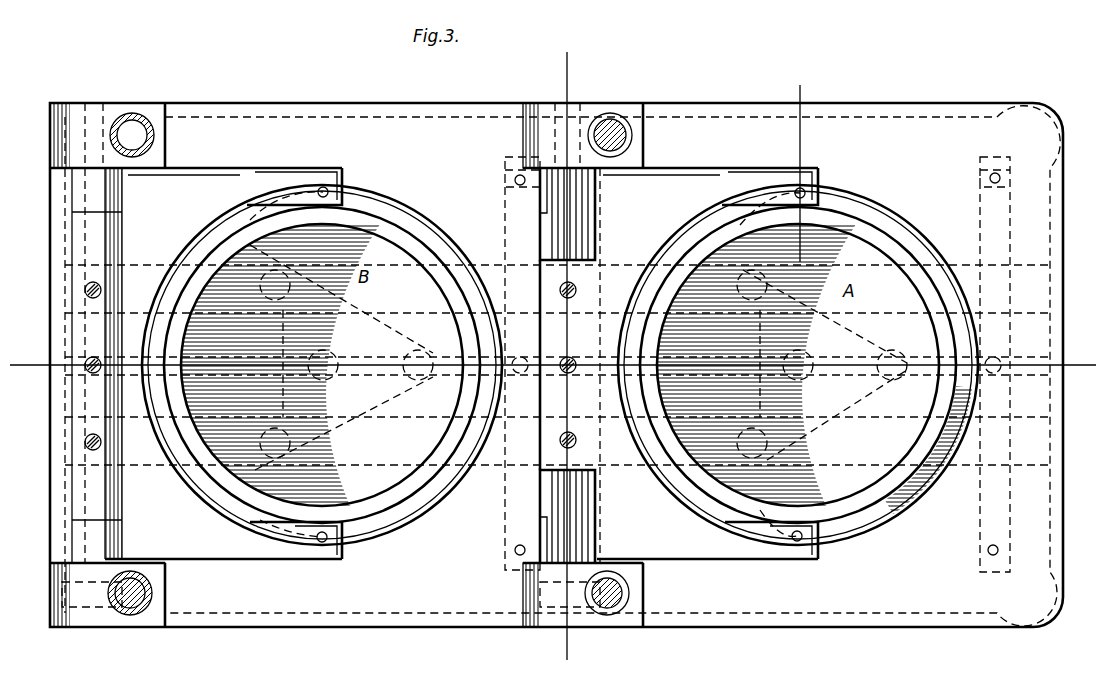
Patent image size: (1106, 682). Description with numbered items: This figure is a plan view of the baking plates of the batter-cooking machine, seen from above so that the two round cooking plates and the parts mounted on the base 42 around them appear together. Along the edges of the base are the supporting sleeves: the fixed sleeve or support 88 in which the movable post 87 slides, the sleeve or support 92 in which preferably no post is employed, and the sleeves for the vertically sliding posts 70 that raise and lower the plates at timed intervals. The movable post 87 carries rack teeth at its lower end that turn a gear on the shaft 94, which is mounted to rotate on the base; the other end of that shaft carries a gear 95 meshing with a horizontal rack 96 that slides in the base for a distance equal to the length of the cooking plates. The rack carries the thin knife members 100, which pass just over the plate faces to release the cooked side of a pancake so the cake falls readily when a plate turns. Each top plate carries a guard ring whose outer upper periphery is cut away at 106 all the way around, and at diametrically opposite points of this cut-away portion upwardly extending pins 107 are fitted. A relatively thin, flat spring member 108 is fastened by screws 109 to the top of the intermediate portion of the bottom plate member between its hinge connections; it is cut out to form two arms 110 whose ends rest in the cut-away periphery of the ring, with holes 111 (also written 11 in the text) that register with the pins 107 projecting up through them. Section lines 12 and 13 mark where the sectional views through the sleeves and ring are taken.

The holes 11 is at (553, 363).
The section line 12- 12 is at (563, 361).
The section line 13- 13 is at (800, 171).
The base 42 is at (556, 365).
The posts 70 is at (607, 616).
The movable post 87 is at (618, 124).
The fixed sleeve or support 88 is at (603, 116).
The sleeve or support 92 is at (132, 113).
The shaft 94 is at (596, 231).
The gear 95 is at (576, 372).
The horizontal rack 96 is at (578, 357).
The knife member 100 is at (505, 207).
The cut away portion 106 is at (360, 500).
The pins 107 is at (328, 190).
The spring member 108 is at (170, 233).
The screws 109 is at (575, 298).
The arms 110 is at (473, 363).
The holes 111 is at (816, 548).